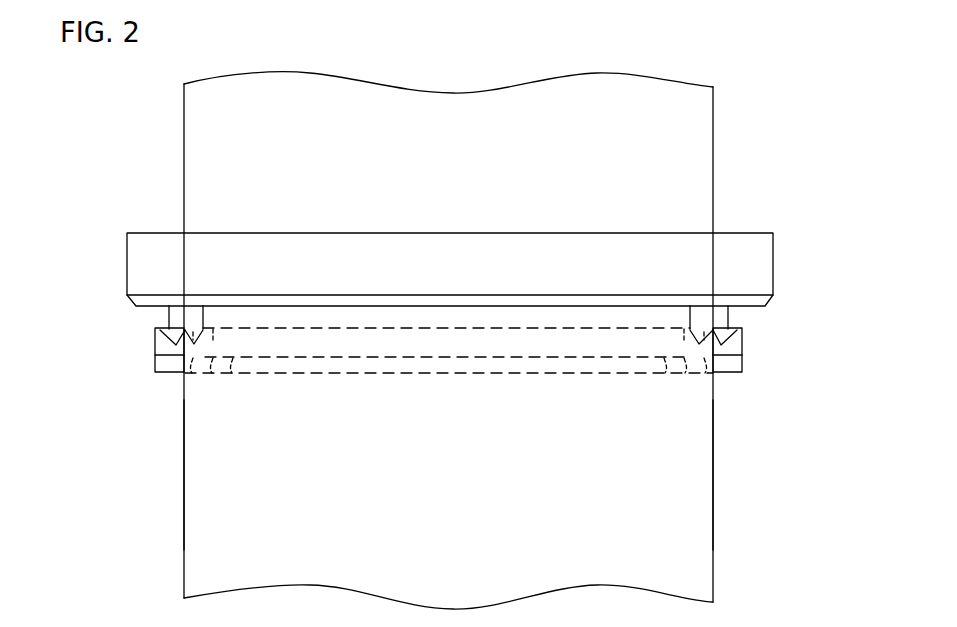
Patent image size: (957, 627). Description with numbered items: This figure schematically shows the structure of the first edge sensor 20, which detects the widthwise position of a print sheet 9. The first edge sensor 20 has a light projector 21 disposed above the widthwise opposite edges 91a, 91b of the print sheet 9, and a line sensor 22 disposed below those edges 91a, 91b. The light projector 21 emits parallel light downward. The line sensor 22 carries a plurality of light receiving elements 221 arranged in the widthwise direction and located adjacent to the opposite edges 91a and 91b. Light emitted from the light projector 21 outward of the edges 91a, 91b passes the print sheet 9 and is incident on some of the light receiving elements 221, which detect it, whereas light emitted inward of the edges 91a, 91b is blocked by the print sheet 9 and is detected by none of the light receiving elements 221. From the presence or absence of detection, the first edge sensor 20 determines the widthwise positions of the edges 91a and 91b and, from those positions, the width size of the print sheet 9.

The print sheet 9 is at (694, 122).
The first edge sensor 20 is at (833, 192).
The light projector 21 is at (740, 234).
The line sensor 22 is at (742, 357).
The light receiving elements 221 is at (164, 373).
The edge 91a is at (183, 472).
The edge 91b is at (714, 472).